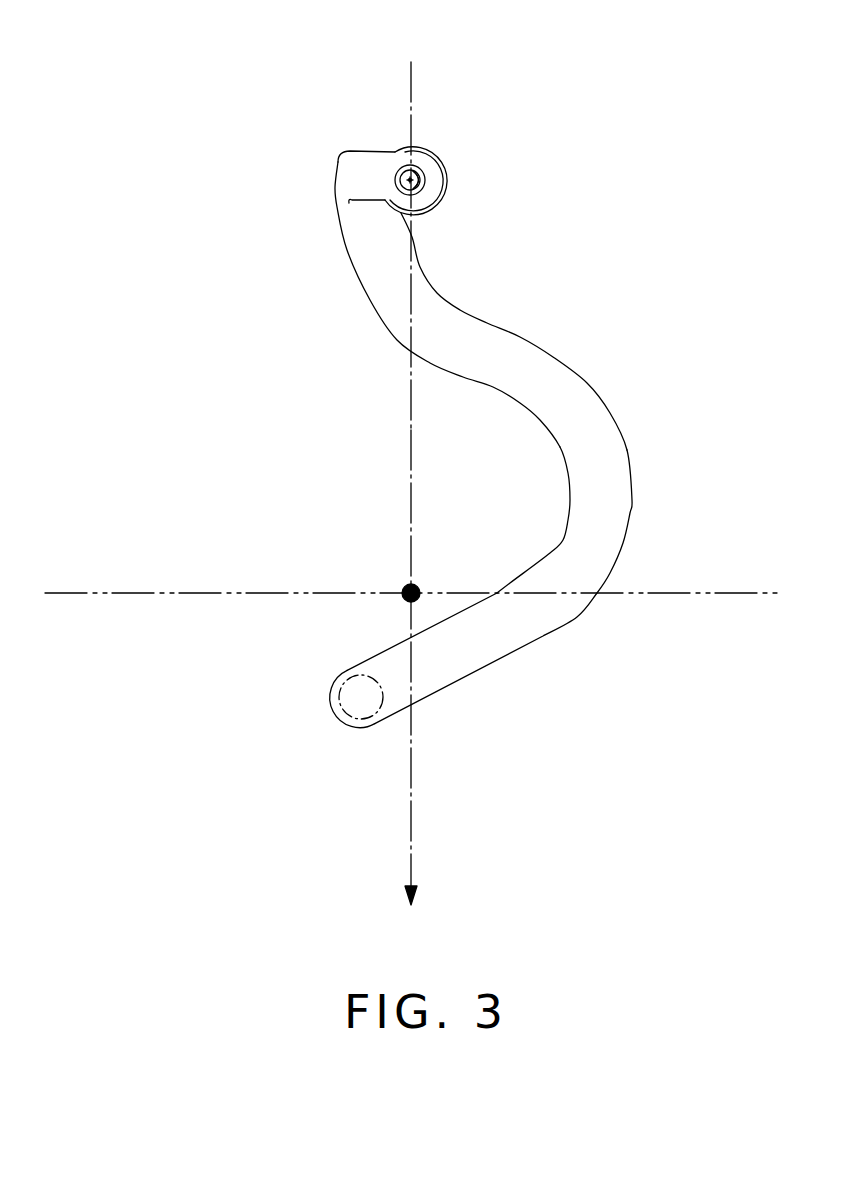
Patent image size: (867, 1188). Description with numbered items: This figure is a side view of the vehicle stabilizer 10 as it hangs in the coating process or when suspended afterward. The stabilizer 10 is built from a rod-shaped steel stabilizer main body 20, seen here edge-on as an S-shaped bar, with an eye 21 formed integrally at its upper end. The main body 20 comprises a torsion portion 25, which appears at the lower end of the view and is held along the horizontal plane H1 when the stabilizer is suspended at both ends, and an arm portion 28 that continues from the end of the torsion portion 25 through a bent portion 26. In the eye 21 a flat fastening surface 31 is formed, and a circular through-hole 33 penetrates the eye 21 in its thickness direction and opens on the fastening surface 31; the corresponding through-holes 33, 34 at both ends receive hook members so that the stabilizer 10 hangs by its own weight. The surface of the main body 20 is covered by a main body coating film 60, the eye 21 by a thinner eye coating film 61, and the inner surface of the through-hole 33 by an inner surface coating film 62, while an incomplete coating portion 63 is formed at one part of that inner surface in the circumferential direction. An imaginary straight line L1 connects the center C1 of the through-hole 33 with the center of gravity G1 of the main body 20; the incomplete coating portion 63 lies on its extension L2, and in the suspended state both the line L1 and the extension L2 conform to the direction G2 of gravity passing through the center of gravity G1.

The vehicle stabilizer 10 is at (647, 214).
The stabilizer main body 20 is at (537, 637).
The eye 21 is at (448, 163).
The torsion portion 25 is at (333, 706).
The bent portion 26 is at (383, 647).
The arm portion 28 is at (537, 423).
The fastening surface 31 is at (415, 161).
The through-hole 33 is at (415, 190).
The through-hole 34 is at (463, 224).
The main body coating film 60 is at (537, 343).
The eye coating film 61 is at (440, 187).
The inner surface coating film 62 is at (397, 188).
The incomplete coating portion 63 is at (428, 172).
The center of the through-hole C1 is at (400, 178).
The center of gravity G1 is at (403, 587).
The direction representing gravity G2 is at (413, 914).
The horizontal plane H1 is at (162, 590).
The imaginary straight line L1 is at (410, 436).
The extension of the imaginary straight line L2 is at (410, 73).